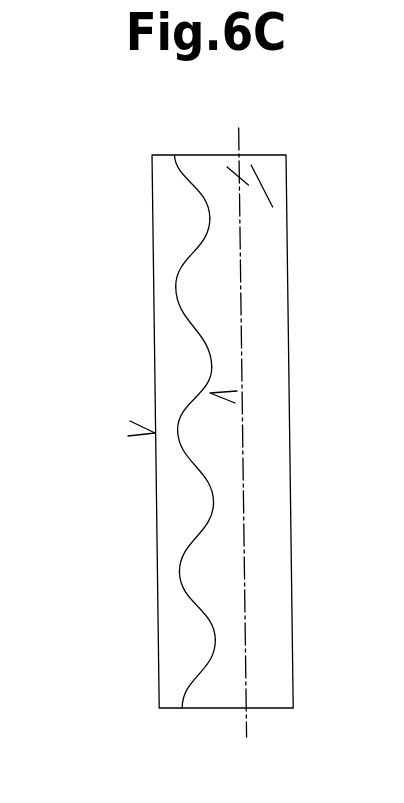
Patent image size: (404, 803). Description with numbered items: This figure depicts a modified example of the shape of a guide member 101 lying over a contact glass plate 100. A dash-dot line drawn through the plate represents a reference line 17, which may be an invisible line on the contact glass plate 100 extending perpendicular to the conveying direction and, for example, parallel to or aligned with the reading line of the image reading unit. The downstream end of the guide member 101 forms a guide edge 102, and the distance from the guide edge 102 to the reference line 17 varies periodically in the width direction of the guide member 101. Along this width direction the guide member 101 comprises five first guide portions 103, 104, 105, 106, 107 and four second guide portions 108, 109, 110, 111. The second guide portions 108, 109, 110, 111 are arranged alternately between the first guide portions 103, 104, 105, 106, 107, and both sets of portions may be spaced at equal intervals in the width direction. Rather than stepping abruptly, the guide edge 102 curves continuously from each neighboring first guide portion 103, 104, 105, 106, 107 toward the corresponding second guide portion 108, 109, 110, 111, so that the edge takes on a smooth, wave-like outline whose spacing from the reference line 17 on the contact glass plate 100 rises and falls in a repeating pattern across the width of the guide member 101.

The reference line 17 is at (248, 722).
The contact glass plate 100 is at (265, 316).
The guide member 101 is at (155, 433).
The guide edge 102 is at (210, 393).
The first guide portion 103 is at (178, 157).
The first guide portion 104 is at (176, 294).
The first guide portion 105 is at (178, 433).
The first guide portion 106 is at (178, 572).
The first guide portion 107 is at (207, 708).
The second guide portion 108 is at (210, 218).
The second guide portion 109 is at (213, 367).
The second guide portion 110 is at (213, 502).
The second guide portion 111 is at (215, 642).